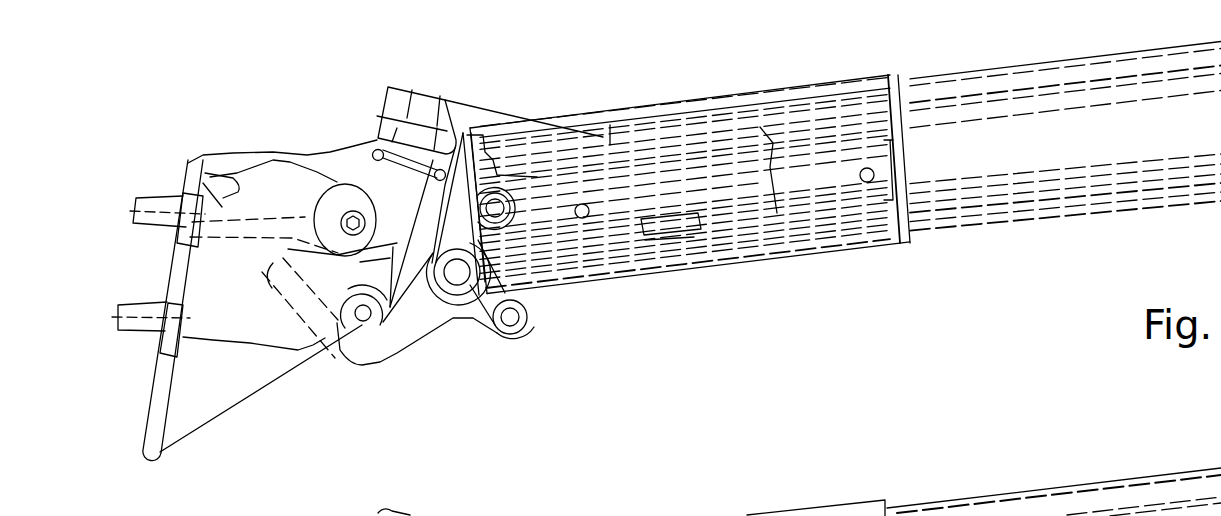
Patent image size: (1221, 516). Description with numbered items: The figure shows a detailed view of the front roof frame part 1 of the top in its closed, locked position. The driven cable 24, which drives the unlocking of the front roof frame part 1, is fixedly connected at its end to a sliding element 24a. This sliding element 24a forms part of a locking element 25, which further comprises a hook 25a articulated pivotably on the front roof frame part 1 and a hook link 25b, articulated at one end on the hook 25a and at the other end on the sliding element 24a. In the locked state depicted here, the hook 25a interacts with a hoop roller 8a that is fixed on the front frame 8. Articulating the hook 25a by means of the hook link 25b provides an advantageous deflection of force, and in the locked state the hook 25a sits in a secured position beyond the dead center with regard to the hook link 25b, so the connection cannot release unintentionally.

The front roof frame part 1 is at (910, 320).
The front frame 8 is at (190, 407).
The hoop roller 8a is at (363, 316).
The driven cable 24 is at (933, 213).
The sliding element 24a is at (641, 208).
The locking element 25 is at (498, 373).
The hook 25a is at (410, 340).
The hook link 25b is at (507, 234).